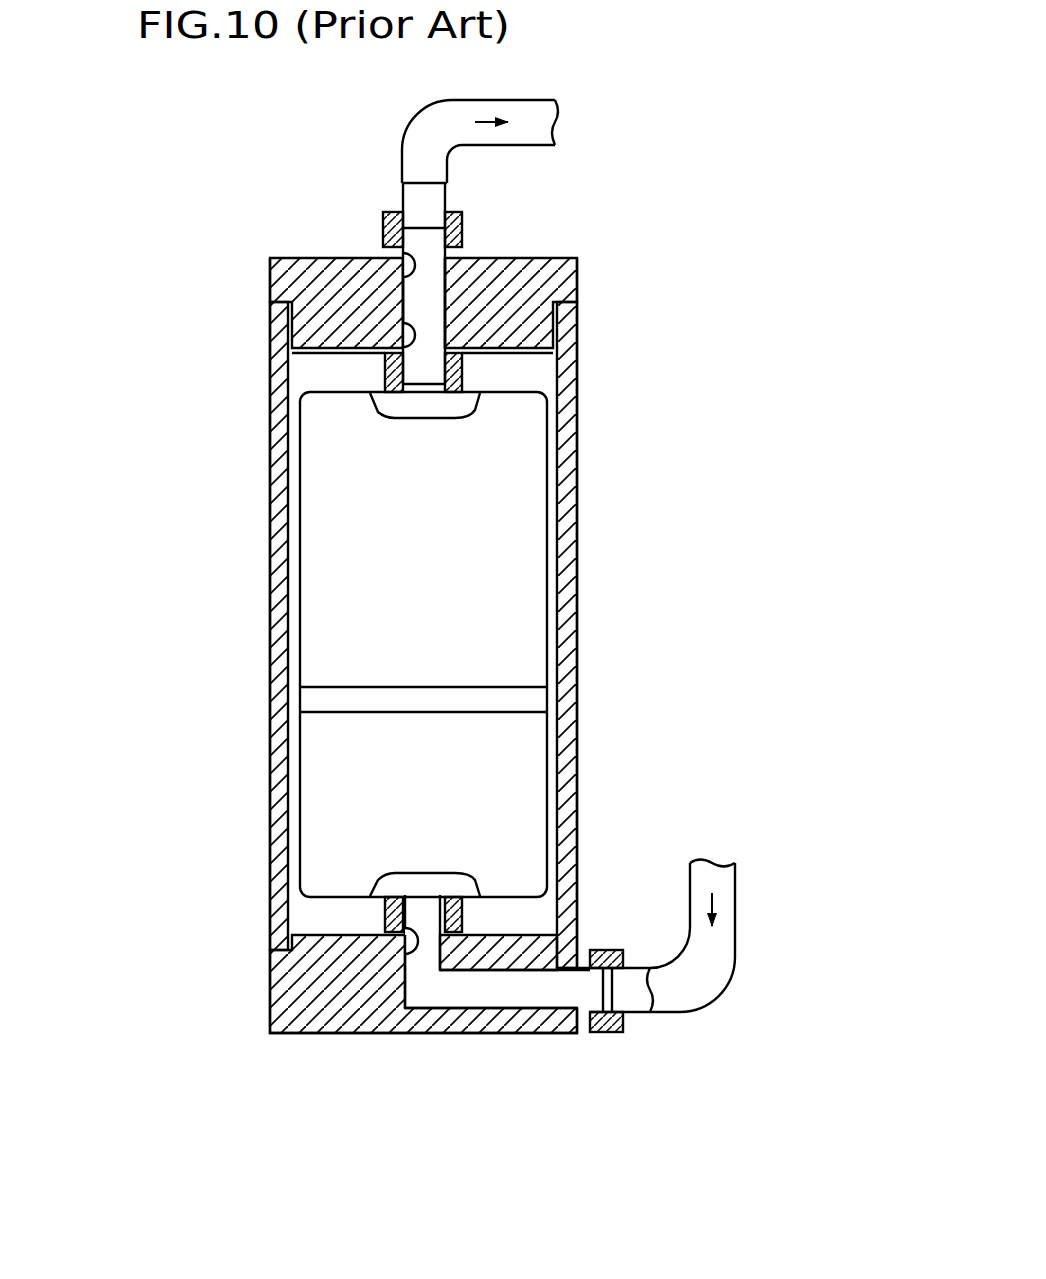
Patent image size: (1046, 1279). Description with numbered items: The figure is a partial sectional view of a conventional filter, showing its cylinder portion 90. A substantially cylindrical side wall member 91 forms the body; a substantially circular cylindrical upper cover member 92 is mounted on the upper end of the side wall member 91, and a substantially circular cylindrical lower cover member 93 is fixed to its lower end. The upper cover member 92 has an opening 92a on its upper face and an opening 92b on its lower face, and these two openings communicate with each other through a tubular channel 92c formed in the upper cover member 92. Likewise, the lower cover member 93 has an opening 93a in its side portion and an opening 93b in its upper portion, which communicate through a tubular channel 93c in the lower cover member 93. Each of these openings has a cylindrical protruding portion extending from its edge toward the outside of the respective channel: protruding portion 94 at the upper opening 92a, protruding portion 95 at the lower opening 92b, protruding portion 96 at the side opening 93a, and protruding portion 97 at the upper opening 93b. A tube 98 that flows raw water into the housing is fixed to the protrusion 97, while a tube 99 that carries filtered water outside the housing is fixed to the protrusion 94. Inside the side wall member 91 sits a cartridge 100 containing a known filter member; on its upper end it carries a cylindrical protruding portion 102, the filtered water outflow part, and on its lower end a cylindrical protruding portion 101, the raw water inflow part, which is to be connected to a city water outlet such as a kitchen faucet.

The cylinder portion 90 is at (612, 569).
The side wall member 91 is at (578, 465).
The upper cover member 92 is at (557, 278).
The opening 92a is at (367, 257).
The opening 92b is at (418, 313).
The tubular channel 92c is at (293, 255).
The lower cover member 93 is at (337, 1020).
The opening 93a is at (527, 997).
The opening 93b is at (397, 958).
The tubular channel 93c is at (423, 988).
The cylindrical protruding portion 94 is at (455, 253).
The cylindrical protruding portion 95 is at (460, 381).
The cylindrical protruding portion 96 is at (433, 927).
The cylindrical protruding portion 97 is at (582, 1020).
The tube 98 is at (717, 993).
The tube 99 is at (412, 122).
The cartridge 100 is at (327, 627).
The cylindrical protruding portion 101 is at (462, 925).
The cylindrical protruding portion 102 is at (377, 383).